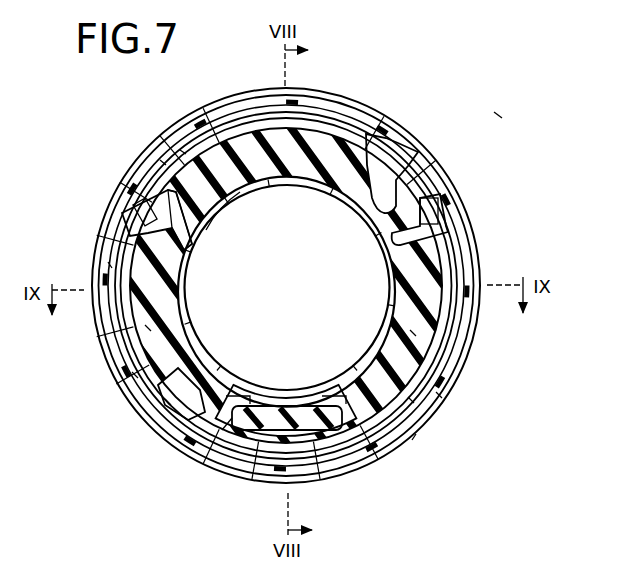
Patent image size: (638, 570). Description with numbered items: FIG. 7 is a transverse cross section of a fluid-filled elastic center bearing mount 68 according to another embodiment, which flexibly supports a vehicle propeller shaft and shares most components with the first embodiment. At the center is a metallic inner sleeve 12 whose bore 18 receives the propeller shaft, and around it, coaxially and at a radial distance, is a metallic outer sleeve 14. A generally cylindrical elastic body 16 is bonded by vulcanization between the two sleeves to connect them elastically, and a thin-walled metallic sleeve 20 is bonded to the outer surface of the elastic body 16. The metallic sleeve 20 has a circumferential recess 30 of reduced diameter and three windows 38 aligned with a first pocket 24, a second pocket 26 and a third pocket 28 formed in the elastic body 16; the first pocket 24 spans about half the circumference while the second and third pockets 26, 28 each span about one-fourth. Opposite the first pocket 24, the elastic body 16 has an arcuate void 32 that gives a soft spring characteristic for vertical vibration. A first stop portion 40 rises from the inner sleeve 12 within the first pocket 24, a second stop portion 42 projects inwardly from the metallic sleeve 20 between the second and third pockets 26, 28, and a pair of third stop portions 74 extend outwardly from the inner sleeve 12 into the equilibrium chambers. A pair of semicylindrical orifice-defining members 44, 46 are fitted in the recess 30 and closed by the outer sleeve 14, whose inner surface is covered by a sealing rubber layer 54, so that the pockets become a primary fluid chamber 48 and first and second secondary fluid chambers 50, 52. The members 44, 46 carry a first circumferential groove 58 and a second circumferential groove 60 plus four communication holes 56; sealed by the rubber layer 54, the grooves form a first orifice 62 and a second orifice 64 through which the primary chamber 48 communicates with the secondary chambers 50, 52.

The inner sleeve 12 is at (300, 182).
The outer sleeve 14 is at (205, 115).
The elastic body 16 is at (220, 214).
The bore 18 is at (275, 400).
The metallic sleeve 20 is at (238, 432).
The first pocket 24 is at (396, 170).
The second pocket 26 is at (412, 400).
The third pocket 28 is at (168, 402).
The circumferential recess 30 is at (318, 440).
The arcuate void 32 is at (268, 432).
The windows 38 is at (404, 212).
The first stop portion 40 is at (314, 140).
The second stop portion 42 is at (240, 450).
The orifice-defining member 44 is at (175, 140).
The orifice-defining member 46 is at (135, 375).
The primary fluid chamber 48 is at (228, 130).
The first secondary fluid chamber 50 is at (440, 395).
The second secondary fluid chamber 52 is at (112, 320).
The sealing rubber layer 54 is at (355, 103).
The communication holes 56 is at (183, 148).
The first circumferential groove 58 is at (380, 122).
The second circumferential groove 60 is at (114, 196).
The first orifice 62 is at (268, 108).
The second orifice 64 is at (140, 200).
The fluid-filled elastic center bearing mount 68 is at (498, 116).
The third stop portions 74 is at (415, 335).